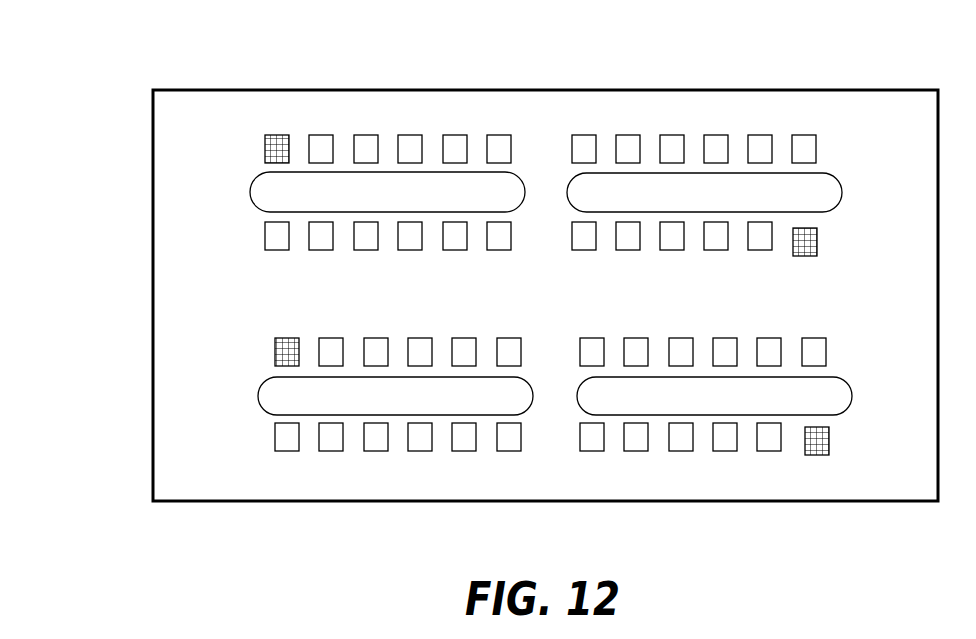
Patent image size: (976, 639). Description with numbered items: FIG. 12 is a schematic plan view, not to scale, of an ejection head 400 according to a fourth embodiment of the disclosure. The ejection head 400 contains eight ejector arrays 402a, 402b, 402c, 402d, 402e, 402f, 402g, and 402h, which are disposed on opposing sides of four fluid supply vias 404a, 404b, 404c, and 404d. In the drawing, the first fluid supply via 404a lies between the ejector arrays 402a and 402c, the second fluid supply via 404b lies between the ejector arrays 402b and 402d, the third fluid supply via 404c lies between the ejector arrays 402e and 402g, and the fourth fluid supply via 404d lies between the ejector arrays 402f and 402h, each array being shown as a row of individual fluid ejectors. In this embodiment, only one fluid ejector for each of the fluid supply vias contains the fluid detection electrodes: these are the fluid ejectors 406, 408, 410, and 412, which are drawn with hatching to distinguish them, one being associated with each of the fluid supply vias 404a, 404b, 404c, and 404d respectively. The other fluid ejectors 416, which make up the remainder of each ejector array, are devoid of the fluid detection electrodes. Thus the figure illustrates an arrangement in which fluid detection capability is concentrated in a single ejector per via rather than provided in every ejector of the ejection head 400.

The device / panel 400 is at (112, 110).
The ejector array 402a is at (335, 93).
The ejector array 402b is at (835, 148).
The ejector array 402c is at (249, 237).
The ejector array 402d is at (745, 264).
The ejector array 402e is at (346, 322).
The ejector array 402f is at (843, 352).
The ejector array 402g is at (259, 436).
The ejector array 402h is at (754, 460).
The fluid supply via 404a is at (387, 192).
The fluid supply via 404b is at (704, 192).
The fluid supply via 404c is at (395, 396).
The fluid supply via 404d is at (714, 396).
The fluid ejector 406 is at (268, 135).
The fluid ejector 408 is at (807, 256).
The fluid ejector 410 is at (280, 338).
The fluid ejector 412 is at (817, 455).
The fluid ejector 416 is at (365, 148).